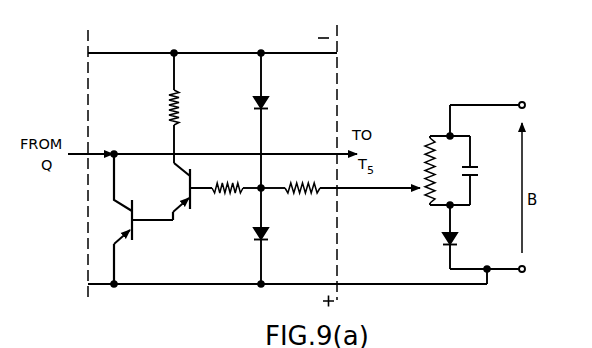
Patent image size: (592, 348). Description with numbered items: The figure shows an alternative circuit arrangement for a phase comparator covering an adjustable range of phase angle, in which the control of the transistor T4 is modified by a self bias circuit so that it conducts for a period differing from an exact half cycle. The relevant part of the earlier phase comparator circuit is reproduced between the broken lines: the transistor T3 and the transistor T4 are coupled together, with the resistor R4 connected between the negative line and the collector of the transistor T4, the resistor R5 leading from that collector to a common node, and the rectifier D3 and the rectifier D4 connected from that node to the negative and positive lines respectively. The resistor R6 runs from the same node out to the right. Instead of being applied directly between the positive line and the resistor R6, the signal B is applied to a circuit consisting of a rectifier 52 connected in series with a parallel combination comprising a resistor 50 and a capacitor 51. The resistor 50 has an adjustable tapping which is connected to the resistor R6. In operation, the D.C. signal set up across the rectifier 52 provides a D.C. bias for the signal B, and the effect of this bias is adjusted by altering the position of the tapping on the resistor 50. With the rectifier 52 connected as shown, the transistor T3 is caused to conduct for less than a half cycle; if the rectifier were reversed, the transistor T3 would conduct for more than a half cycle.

The resistor R4 is at (163, 108).
The resistor R5 is at (236, 199).
The resistor R6 is at (340, 199).
The rectifier D3 is at (271, 108).
The rectifier D4 is at (271, 239).
The transistor T3 is at (143, 219).
The transistor T4 is at (192, 200).
The resistor 50 is at (415, 170).
The capacitor 51 is at (480, 170).
The rectifier 52 is at (461, 243).